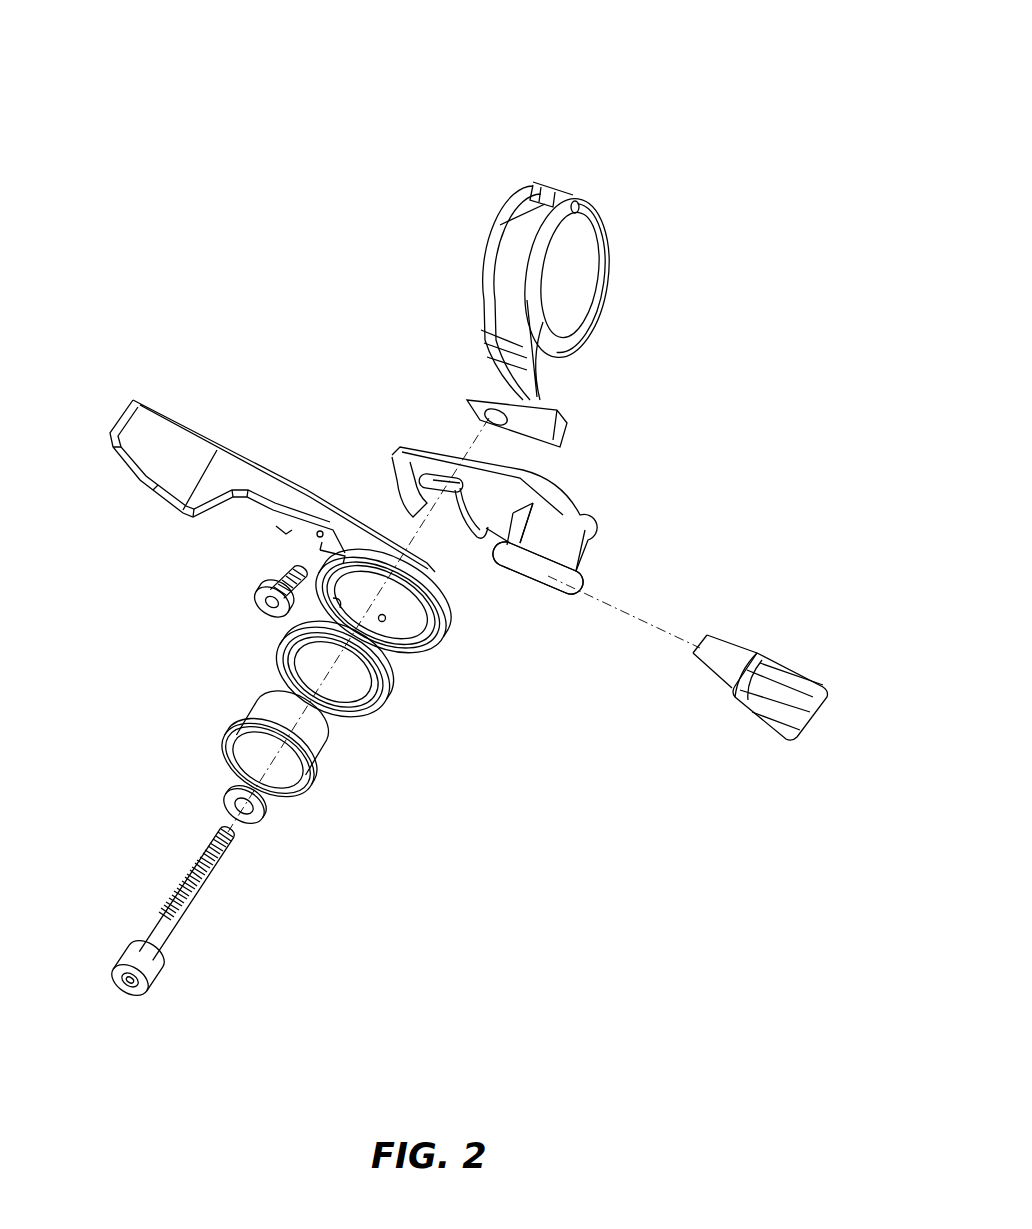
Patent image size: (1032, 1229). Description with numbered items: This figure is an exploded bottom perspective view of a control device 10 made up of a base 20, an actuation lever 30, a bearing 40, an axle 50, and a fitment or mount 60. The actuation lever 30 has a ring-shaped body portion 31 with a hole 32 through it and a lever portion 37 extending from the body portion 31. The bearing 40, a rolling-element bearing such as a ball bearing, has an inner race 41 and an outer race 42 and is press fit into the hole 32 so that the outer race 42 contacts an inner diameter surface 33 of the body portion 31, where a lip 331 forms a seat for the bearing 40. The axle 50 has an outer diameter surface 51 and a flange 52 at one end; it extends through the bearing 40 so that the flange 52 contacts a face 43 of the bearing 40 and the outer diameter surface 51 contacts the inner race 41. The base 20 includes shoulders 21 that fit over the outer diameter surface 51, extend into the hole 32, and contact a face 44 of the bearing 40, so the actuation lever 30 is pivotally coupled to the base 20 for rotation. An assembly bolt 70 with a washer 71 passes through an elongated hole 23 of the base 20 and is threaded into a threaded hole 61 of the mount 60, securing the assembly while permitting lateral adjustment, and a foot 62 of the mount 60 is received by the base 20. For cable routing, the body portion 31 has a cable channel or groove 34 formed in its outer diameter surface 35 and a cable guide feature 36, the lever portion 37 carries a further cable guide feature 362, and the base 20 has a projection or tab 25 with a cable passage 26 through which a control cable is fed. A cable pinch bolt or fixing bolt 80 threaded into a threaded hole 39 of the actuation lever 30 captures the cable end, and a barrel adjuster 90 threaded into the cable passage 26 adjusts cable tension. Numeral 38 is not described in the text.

The control device 10 is at (720, 65).
The base 20 is at (518, 521).
The shoulders 21 is at (400, 466).
The hole 23 is at (443, 494).
The projection or tab 25 is at (550, 538).
The cable passage 26 is at (570, 574).
The actuation lever 30 is at (309, 551).
The body portion 31 is at (408, 592).
The hole 32 is at (412, 632).
The inner diameter surface 33 is at (335, 603).
The lip 331 is at (384, 616).
The cable channel or groove 34 is at (435, 608).
The outer diameter surface 35 is at (440, 594).
The cable guide feature 36 is at (341, 548).
The cable guide feature 362 is at (282, 531).
The lever portion 37 is at (172, 527).
The paddle 38 is at (175, 447).
The threaded hole 39 is at (290, 549).
The bearing 40 is at (344, 690).
The inner race 41 is at (293, 657).
The outer race 42 is at (381, 688).
The face 43 is at (340, 712).
The face 44 is at (388, 668).
The axle 50 is at (245, 751).
The outer diameter surface 51 is at (262, 718).
The flange 52 is at (316, 777).
The fitment or mount 60 is at (567, 314).
The threaded hole 61 is at (485, 418).
The foot 62 is at (510, 402).
The assembly bolt 70 is at (207, 935).
The washer 71 is at (226, 800).
The cable pinch bolt or fixing bolt 80 is at (250, 606).
The barrel adjuster 90 is at (808, 640).